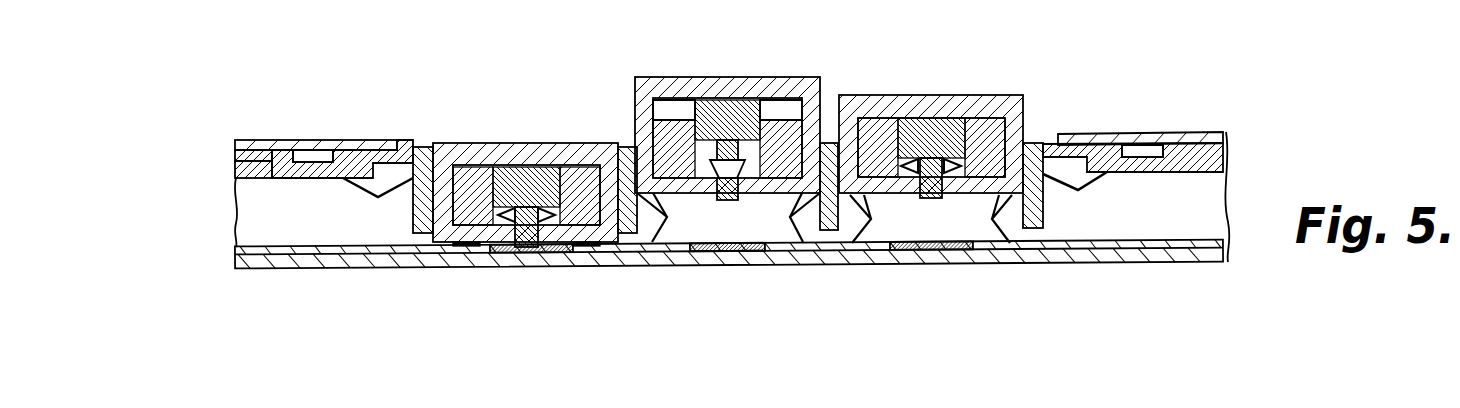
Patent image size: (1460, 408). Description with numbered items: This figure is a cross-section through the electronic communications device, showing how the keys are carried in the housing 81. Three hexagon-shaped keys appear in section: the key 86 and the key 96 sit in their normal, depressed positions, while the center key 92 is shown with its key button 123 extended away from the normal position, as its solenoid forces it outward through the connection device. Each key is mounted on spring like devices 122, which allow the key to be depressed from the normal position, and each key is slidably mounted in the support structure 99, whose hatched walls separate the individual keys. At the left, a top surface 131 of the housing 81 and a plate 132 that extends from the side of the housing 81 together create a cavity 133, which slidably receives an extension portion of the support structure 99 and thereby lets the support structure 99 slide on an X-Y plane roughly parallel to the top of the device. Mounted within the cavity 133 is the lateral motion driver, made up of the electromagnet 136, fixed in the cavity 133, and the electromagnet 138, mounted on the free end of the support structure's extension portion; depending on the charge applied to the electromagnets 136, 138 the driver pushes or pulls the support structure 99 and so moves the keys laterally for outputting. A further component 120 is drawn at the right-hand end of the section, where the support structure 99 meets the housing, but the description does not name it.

The housing 81 is at (383, 265).
The key 86 is at (930, 95).
The center key 92 is at (709, 128).
The key 96 is at (533, 143).
The support structure 99 is at (415, 148).
The right end block 120 is at (1070, 172).
The spring like devices 122 is at (870, 226).
The key button 123 is at (652, 77).
The top surface 131 is at (248, 140).
The plate 132 is at (240, 173).
The cavity 133 is at (240, 157).
The electromagnet 136 is at (310, 150).
The electromagnet 138 is at (340, 157).